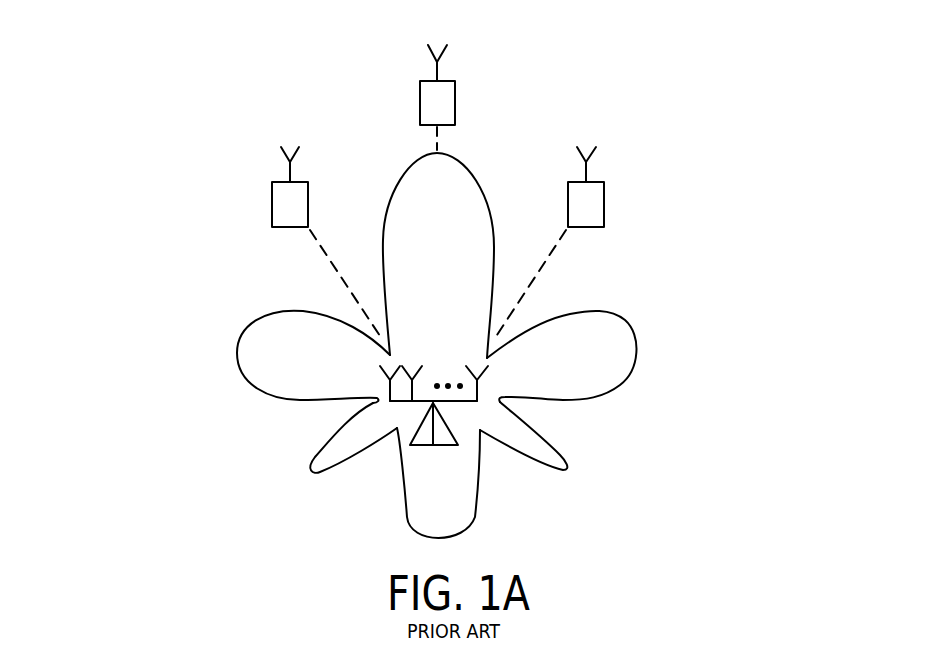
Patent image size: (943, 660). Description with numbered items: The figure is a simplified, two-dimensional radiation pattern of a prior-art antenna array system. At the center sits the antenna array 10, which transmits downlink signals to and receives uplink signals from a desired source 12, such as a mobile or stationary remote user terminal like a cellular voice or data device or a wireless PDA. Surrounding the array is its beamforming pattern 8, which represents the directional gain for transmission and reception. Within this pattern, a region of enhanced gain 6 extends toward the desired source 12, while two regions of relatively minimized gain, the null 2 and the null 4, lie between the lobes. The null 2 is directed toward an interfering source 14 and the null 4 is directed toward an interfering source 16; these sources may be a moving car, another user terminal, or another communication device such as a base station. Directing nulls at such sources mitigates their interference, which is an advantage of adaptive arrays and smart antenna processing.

The null region 2 is at (390, 355).
The null region 4 is at (487, 358).
The region of enhanced gain 6 is at (470, 173).
The beamforming pattern 8 is at (549, 330).
The antenna array 10 is at (423, 445).
The desired source 12 is at (690, 87).
The interfering source 14 is at (272, 228).
The interfering source 16 is at (842, 212).